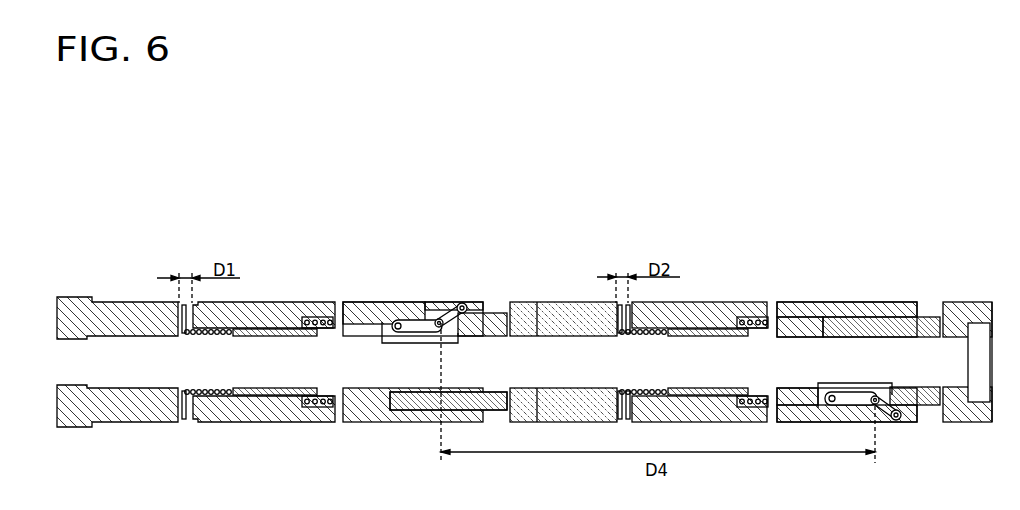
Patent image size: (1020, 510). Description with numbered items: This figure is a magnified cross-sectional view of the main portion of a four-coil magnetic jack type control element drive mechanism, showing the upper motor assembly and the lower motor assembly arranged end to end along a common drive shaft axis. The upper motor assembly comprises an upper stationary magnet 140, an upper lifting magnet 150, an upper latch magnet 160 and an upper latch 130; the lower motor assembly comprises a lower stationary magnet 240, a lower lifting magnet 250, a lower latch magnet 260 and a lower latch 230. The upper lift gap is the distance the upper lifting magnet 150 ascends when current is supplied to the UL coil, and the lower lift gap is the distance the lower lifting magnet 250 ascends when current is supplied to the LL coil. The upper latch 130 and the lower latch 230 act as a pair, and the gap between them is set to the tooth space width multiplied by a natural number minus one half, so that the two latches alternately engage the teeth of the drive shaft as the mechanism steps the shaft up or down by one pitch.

The upper latch 130 is at (447, 303).
The upper stationary magnet 140 is at (137, 412).
The upper lifting magnet 150 is at (254, 412).
The upper latch magnet 160 is at (397, 422).
The lower latch 230 is at (886, 412).
The lower stationary magnet 240 is at (575, 300).
The lower lifting magnet 250 is at (697, 302).
The lower latch magnet 260 is at (830, 302).